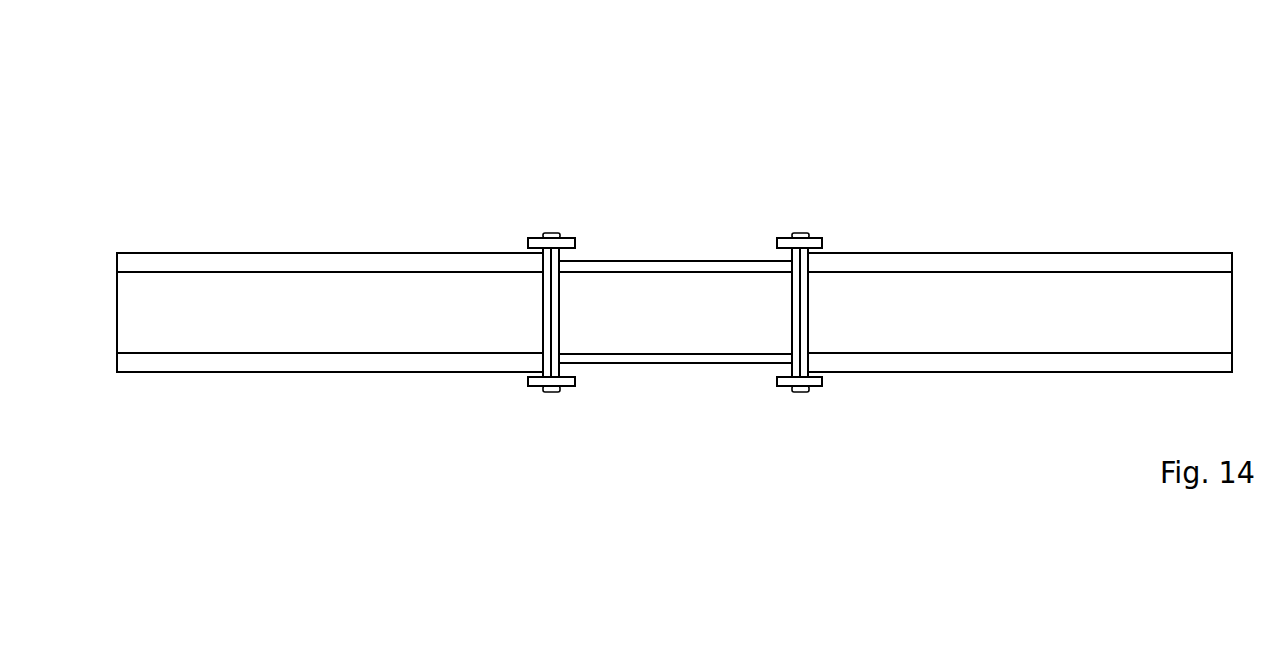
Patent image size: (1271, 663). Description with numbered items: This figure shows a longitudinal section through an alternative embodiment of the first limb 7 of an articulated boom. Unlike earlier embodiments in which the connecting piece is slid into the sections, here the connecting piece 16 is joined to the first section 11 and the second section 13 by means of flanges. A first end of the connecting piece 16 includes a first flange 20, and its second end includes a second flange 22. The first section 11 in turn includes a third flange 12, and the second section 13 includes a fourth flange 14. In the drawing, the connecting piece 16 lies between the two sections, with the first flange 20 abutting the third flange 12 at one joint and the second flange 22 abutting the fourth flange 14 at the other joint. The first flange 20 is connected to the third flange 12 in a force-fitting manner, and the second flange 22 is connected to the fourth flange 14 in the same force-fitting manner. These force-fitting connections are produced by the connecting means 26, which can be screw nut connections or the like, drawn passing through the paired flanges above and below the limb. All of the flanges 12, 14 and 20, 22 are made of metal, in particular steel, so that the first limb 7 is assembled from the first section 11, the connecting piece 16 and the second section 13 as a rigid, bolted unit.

The first limb 7 is at (878, 178).
The first section 11 is at (280, 253).
The second section 13 is at (1105, 253).
The connecting piece 16 is at (680, 261).
The connecting means 26 is at (533, 238).
The third flange 12 is at (547, 393).
The fourth flange 14 is at (805, 393).
The first flange 20 is at (555, 393).
The second flange 22 is at (797, 393).